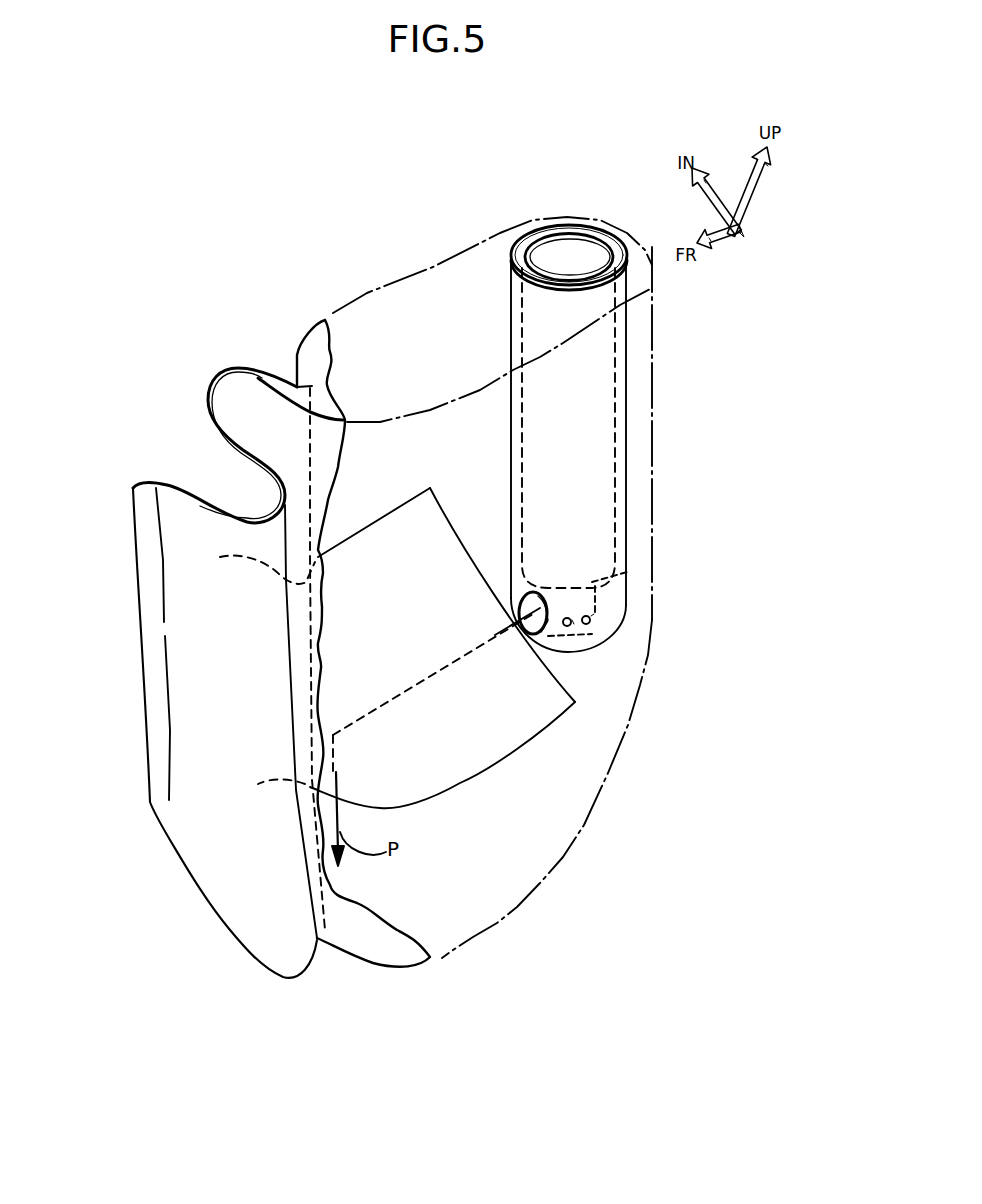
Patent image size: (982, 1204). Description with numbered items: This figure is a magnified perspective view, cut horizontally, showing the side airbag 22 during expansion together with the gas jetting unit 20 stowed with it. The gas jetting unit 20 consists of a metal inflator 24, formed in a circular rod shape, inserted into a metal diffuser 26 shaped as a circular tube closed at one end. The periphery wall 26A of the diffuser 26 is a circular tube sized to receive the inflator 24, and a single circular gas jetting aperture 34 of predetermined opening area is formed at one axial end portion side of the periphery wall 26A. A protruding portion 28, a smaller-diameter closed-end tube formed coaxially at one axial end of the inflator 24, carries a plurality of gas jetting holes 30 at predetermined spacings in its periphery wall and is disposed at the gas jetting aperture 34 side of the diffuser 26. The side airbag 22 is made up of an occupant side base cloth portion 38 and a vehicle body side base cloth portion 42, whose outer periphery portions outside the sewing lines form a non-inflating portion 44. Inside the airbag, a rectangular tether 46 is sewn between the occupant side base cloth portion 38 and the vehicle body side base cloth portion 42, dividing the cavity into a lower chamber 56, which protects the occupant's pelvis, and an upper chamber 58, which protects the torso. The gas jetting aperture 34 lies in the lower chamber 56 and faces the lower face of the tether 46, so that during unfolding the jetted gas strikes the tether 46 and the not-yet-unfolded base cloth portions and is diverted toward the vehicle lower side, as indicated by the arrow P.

The gas jetting unit 20 is at (559, 432).
The side airbag 22 is at (258, 675).
The inflator 24 is at (568, 230).
The diffuser 26 is at (630, 316).
The periphery wall 26A is at (607, 234).
The protruding portion 28 is at (606, 601).
The gas jetting holes 30 is at (595, 614).
The gas jetting aperture 34 is at (520, 603).
The occupant side base cloth portion 38 is at (227, 473).
The vehicle body side base cloth portion 42 is at (232, 920).
The non-inflating portion 44 is at (155, 702).
The tether 46 is at (436, 648).
The lower chamber 56 is at (478, 858).
The upper chamber 58 is at (418, 459).